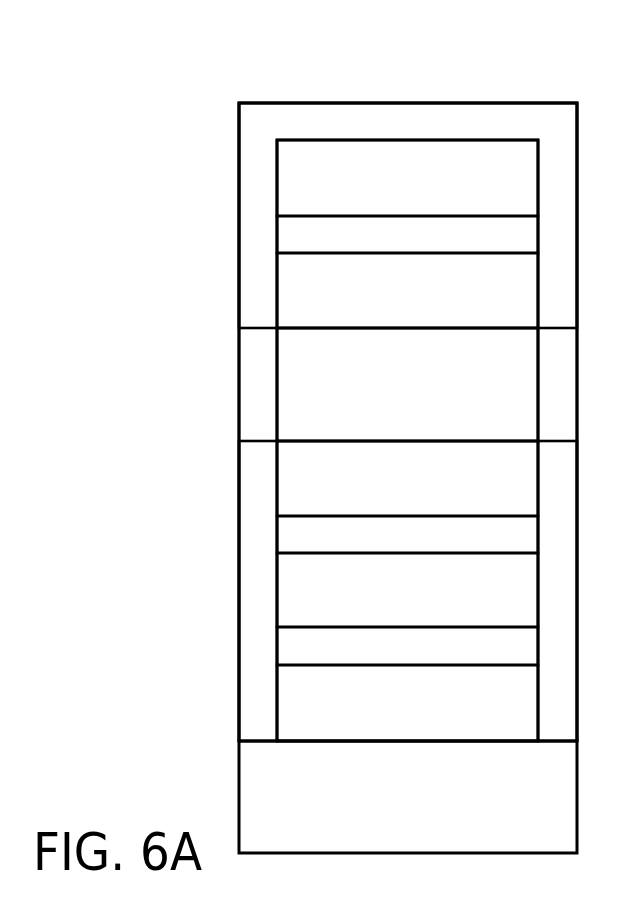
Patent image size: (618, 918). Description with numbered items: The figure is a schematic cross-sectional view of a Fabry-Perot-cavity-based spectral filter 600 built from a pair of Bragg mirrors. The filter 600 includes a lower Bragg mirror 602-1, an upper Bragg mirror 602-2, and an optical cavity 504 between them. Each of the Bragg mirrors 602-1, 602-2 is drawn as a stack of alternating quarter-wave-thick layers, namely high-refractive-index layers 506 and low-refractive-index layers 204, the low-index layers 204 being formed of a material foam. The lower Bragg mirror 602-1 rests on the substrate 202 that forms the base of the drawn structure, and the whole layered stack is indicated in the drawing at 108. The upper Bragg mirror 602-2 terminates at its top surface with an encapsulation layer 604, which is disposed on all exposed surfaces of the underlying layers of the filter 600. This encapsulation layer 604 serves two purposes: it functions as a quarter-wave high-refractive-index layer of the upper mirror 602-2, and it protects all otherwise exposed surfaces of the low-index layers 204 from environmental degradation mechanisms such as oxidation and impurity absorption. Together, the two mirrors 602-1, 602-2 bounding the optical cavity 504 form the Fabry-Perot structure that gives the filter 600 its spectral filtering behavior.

The filter 600 is at (124, 72).
The optical filter 108 is at (409, 68).
The optical cavity 504 is at (239, 382).
The encapsulation layer 604 is at (431, 134).
The low-refractive-index layers 204 is at (431, 190).
The high-refractive-index layers 506 is at (431, 246).
The Bragg mirror 602-2 is at (230, 103).
The Bragg mirror 602-1 is at (230, 442).
The substrate 202 is at (483, 838).